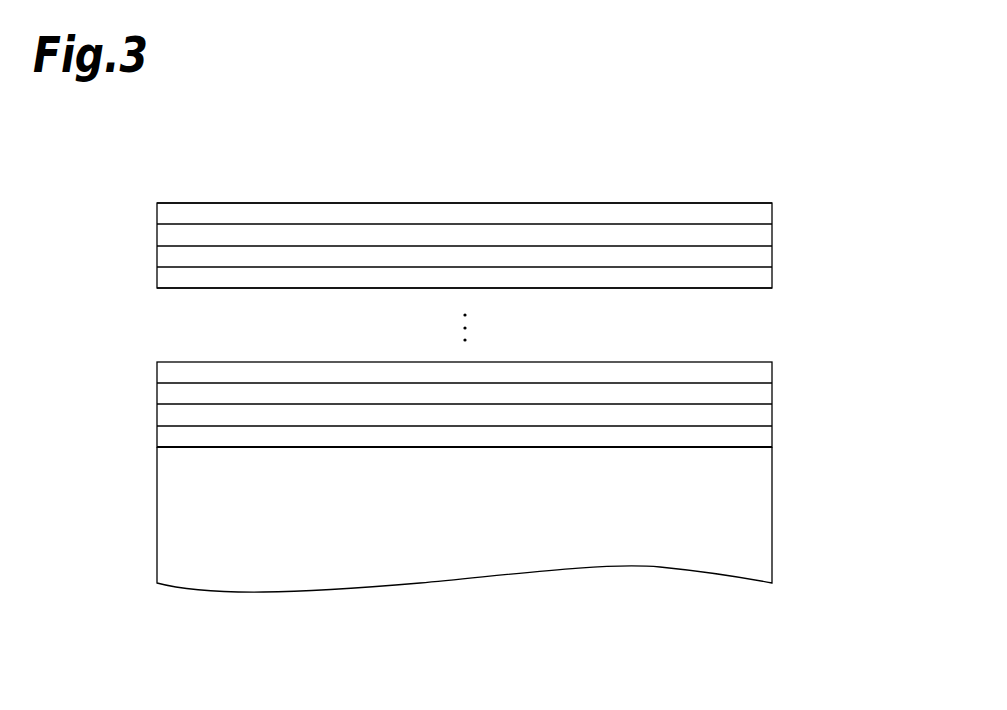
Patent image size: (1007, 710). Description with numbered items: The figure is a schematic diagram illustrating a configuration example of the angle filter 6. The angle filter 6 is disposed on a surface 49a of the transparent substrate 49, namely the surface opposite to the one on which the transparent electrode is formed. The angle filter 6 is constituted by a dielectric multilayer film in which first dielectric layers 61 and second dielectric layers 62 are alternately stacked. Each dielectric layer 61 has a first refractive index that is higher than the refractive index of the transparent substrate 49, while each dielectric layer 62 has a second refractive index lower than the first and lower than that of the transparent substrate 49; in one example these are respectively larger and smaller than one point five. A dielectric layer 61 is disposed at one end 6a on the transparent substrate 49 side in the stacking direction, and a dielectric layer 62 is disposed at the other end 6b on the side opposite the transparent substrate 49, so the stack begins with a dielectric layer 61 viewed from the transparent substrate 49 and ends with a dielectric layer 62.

The angle filter 6 is at (131, 204).
The one end 6a is at (428, 447).
The other end 6b is at (410, 202).
The dielectric layer 61 is at (772, 235).
The dielectric layer 62 is at (772, 213).
The transparent substrate 49 is at (772, 523).
The surface 49a is at (557, 445).